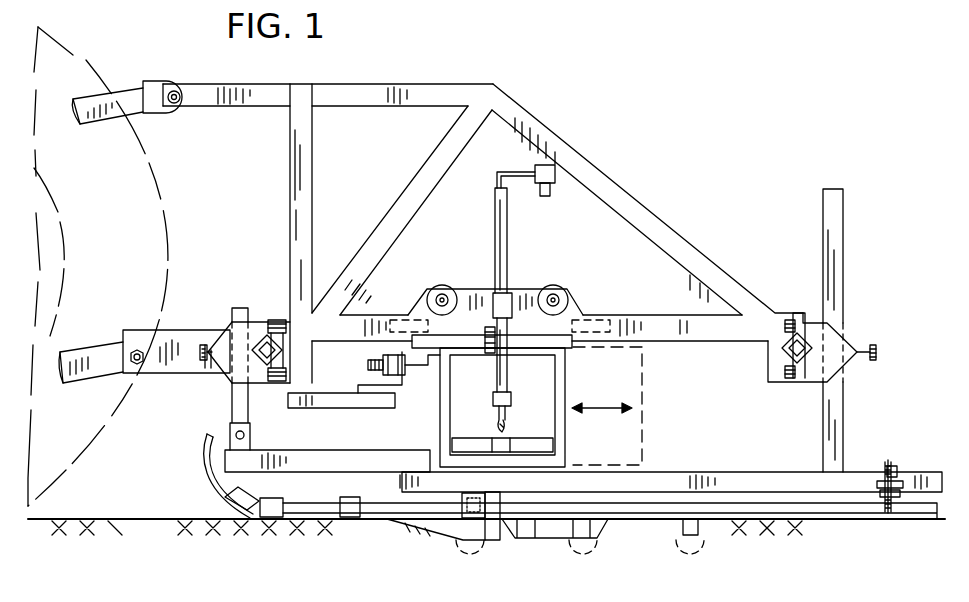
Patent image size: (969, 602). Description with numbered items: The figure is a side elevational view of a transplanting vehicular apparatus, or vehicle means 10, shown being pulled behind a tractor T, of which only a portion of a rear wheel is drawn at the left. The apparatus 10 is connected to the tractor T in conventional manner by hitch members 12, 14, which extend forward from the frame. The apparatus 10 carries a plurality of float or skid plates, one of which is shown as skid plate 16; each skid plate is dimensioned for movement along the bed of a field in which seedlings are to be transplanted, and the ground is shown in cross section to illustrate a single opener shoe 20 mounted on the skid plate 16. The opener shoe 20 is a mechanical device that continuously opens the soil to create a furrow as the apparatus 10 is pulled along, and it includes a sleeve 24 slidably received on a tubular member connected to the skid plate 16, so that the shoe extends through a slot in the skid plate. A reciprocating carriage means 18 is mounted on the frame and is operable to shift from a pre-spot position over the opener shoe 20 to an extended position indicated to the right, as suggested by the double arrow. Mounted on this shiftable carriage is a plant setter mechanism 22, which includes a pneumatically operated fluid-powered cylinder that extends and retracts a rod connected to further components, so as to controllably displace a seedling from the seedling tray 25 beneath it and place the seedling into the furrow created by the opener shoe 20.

The tractor T is at (88, 55).
The vehicle means 10 is at (647, 102).
The hitch member 12 is at (127, 87).
The hitch member 14 is at (86, 378).
The skid plate 16 is at (202, 477).
The reciprocating carriage means 18 is at (574, 368).
The opener shoe 20 is at (418, 532).
The plant setter mechanism 22 is at (517, 280).
The sleeve 24 is at (463, 500).
The seedling tray 25 is at (543, 446).